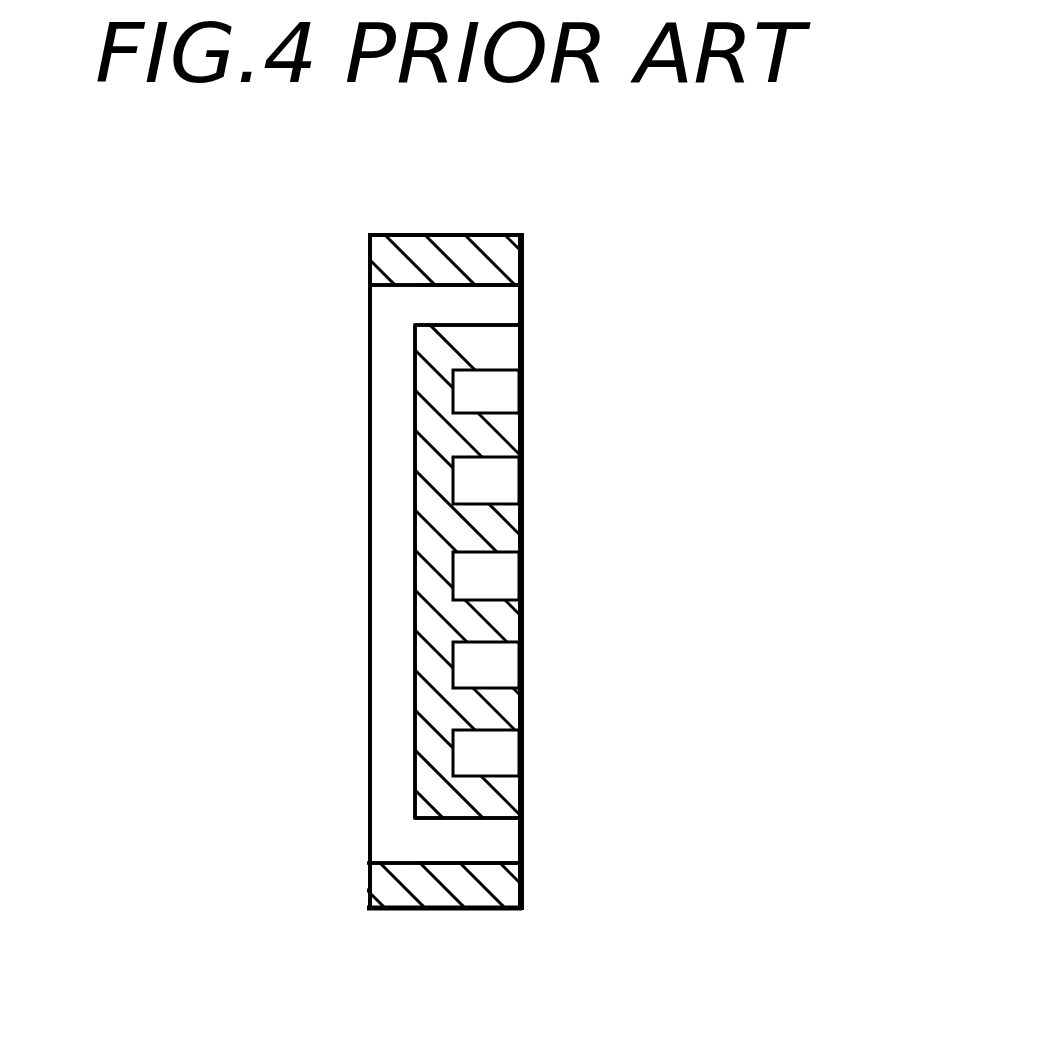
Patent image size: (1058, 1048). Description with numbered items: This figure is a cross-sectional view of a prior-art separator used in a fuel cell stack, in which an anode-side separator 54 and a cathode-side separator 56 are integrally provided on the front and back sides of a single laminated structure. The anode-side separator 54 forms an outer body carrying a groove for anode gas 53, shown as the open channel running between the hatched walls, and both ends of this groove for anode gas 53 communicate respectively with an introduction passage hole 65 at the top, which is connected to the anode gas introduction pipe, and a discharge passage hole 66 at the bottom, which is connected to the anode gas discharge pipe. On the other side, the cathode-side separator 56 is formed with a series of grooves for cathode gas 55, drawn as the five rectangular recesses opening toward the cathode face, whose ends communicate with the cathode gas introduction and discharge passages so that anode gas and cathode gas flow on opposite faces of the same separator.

The grooves for anode gas 53 is at (368, 402).
The anode-side separator 54 is at (368, 591).
The grooves for cathode gas 55 is at (505, 572).
The cathode-side separator 56 is at (508, 437).
The introduction passage hole 65 is at (500, 305).
The discharge passage hole 66 is at (500, 837).